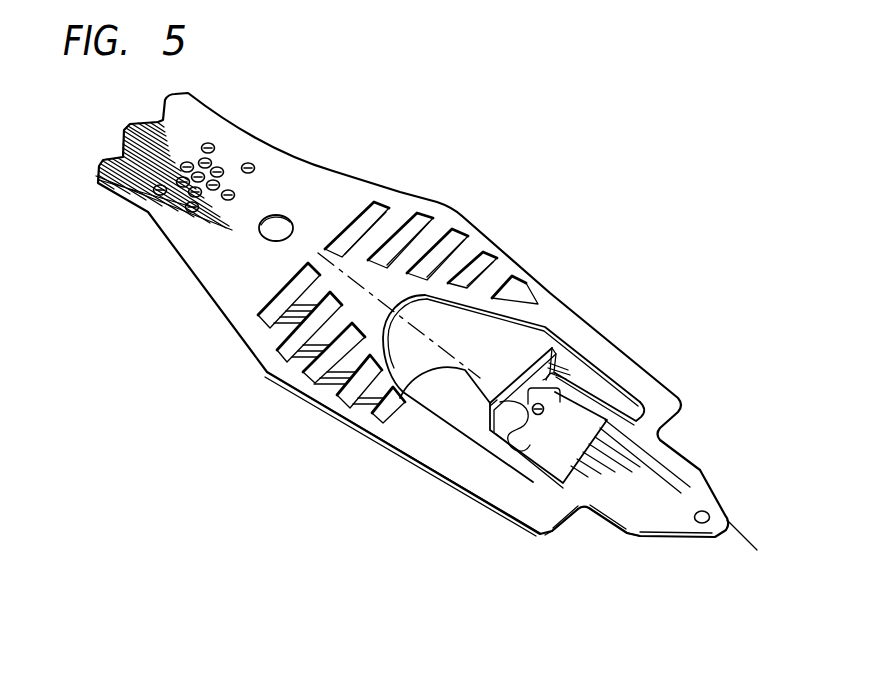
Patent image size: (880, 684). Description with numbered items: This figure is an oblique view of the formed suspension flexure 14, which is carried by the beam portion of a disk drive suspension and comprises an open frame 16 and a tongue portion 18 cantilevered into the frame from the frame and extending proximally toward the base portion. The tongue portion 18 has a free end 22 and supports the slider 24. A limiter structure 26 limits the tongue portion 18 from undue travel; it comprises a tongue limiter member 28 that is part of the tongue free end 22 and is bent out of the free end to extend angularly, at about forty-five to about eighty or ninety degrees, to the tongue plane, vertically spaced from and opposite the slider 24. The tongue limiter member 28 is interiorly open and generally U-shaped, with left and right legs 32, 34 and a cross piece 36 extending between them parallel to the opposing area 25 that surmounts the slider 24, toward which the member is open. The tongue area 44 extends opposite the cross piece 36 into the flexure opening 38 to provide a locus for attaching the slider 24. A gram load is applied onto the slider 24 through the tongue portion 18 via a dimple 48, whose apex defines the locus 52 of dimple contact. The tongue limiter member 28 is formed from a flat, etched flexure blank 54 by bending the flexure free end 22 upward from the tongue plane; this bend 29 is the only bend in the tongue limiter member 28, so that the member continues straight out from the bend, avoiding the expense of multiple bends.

The flexure 14 is at (483, 178).
The flexure blank 54 is at (345, 178).
The slider 24 is at (397, 425).
The open frame 16 is at (480, 488).
The tongue portion 18 is at (560, 443).
The free end 22 is at (556, 378).
The opposing area 25 is at (478, 376).
The limiter structure 26 is at (560, 340).
The tongue limiter member 28 is at (500, 376).
The bend 29 is at (565, 395).
The left leg 32 is at (470, 407).
The right leg 34 is at (567, 403).
The cross piece 36 is at (542, 366).
The flexure opening 38 is at (528, 420).
The tongue area 44 is at (498, 395).
The dimple 48 is at (539, 414).
The locus 52 is at (542, 416).